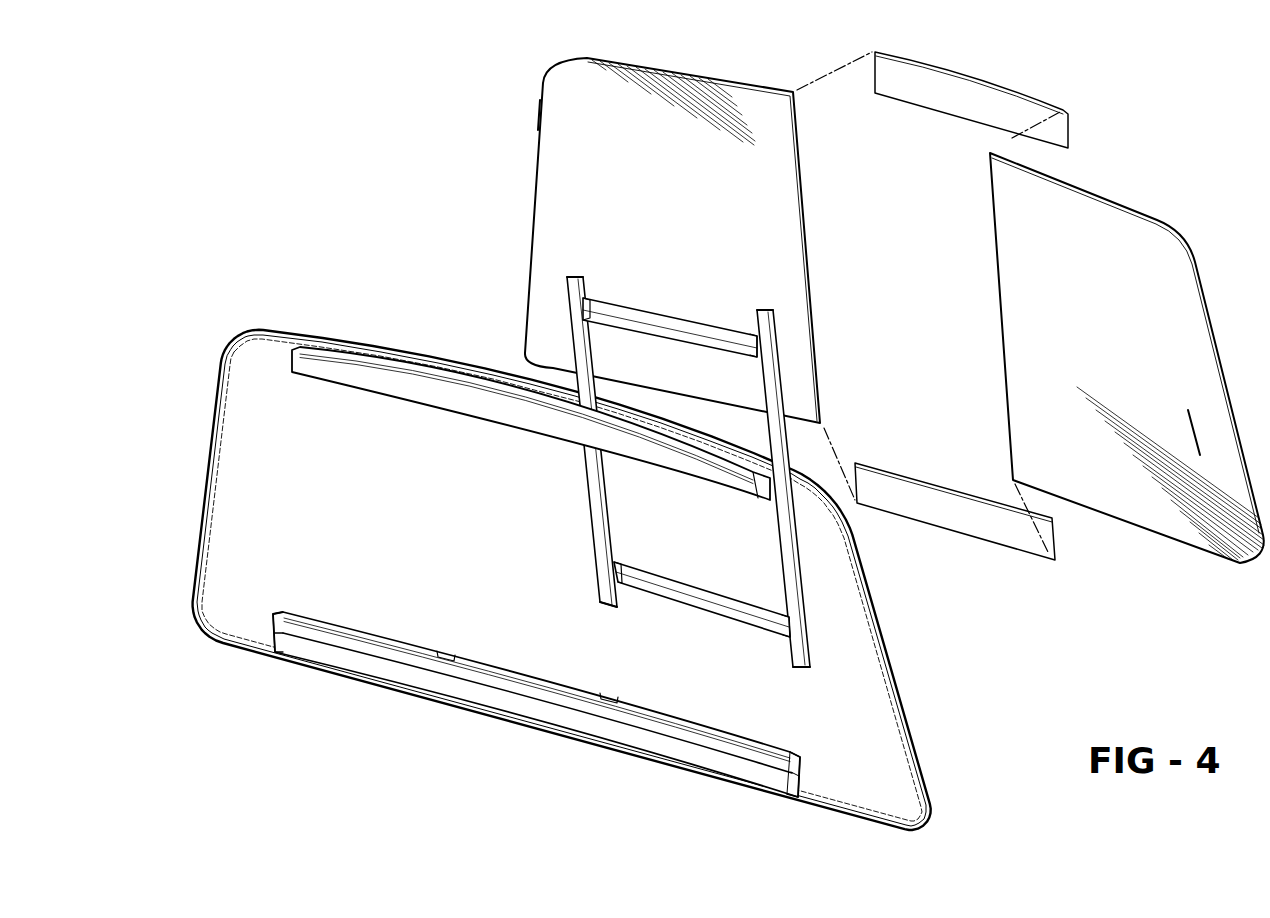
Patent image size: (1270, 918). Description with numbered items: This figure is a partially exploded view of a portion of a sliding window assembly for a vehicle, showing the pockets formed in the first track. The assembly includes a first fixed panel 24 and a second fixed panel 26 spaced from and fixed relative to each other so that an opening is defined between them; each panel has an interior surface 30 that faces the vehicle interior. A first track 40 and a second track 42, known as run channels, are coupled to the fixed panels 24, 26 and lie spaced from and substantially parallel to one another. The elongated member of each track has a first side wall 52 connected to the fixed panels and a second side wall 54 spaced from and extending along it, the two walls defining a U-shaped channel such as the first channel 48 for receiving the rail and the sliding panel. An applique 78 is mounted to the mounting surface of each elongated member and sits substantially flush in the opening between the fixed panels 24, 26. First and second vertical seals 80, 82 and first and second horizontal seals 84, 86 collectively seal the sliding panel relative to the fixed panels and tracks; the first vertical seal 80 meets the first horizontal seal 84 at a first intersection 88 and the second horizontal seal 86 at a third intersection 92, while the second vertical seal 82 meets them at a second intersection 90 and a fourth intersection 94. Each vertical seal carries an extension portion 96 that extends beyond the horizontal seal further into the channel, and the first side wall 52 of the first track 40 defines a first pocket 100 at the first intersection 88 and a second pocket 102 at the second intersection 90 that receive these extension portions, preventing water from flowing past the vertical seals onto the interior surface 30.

The first fixed panel 24 is at (545, 208).
The second fixed panel 26 is at (1170, 290).
The interior surface 30 is at (557, 113).
The first track 40 is at (745, 786).
The second track 42 is at (343, 370).
The first channel 48 is at (355, 642).
The first side wall 52 is at (760, 740).
The second side wall 54 is at (565, 425).
The applique 78 is at (955, 109).
The first vertical seal 80 is at (572, 328).
The second vertical seal 82 is at (778, 398).
The first horizontal seal 84 is at (690, 596).
The second horizontal seal 86 is at (680, 336).
The first intersection 88 is at (614, 563).
The second intersection 90 is at (786, 640).
The third intersection 92 is at (590, 300).
The fourth intersection 94 is at (750, 332).
The extension portion 96 is at (575, 277).
The first pocket 100 is at (455, 651).
The second pocket 102 is at (615, 690).